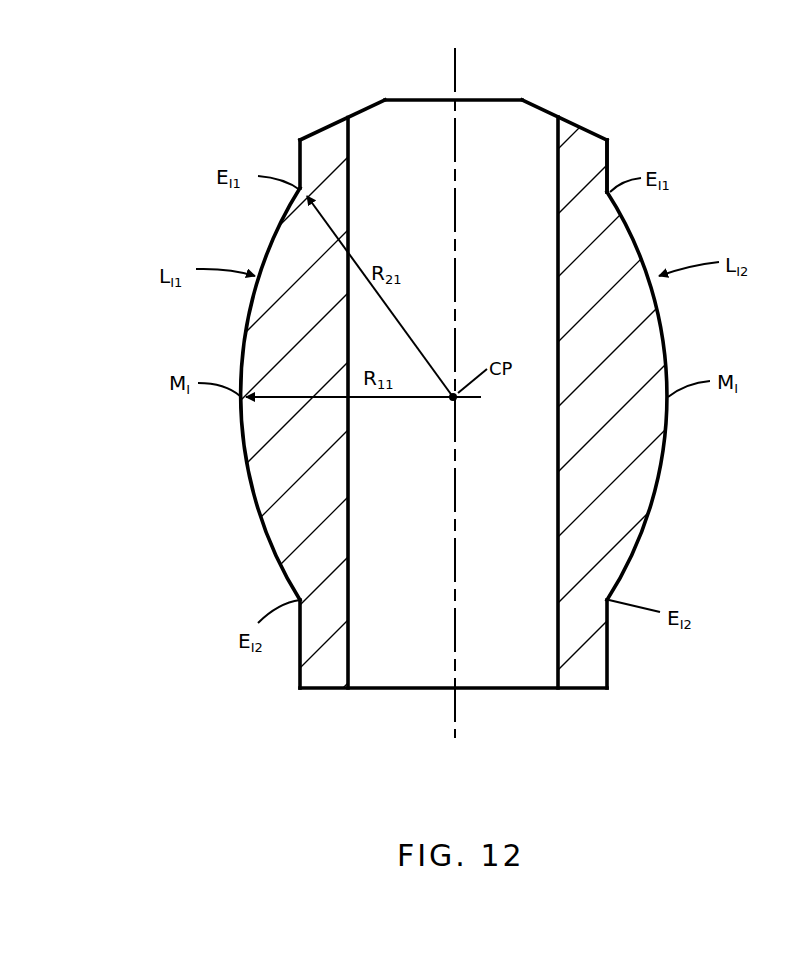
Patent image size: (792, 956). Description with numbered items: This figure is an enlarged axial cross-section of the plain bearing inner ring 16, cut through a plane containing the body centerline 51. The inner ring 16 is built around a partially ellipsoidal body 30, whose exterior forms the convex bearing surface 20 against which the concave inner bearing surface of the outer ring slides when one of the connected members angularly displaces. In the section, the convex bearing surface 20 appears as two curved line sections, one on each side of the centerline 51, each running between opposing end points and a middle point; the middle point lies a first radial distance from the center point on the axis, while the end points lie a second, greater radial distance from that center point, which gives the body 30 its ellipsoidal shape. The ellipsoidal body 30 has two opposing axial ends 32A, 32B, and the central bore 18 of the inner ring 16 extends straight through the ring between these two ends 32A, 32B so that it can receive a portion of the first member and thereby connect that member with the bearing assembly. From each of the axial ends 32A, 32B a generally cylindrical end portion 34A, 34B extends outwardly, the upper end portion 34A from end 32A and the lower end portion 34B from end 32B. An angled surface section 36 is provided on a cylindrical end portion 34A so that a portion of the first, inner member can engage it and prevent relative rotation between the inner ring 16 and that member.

The inner ring 16 is at (193, 203).
The central bore 18 is at (515, 140).
The convex bearing surface 20 is at (236, 440).
The partially ellipsoidal body 30 is at (644, 235).
The body axial end 32A is at (578, 187).
The body axial end 32B is at (325, 598).
The cylindrical end portion 34A is at (310, 135).
The cylindrical end portion 34B is at (590, 690).
The angled surface section 36 is at (586, 112).
The body centerline 51 is at (452, 73).